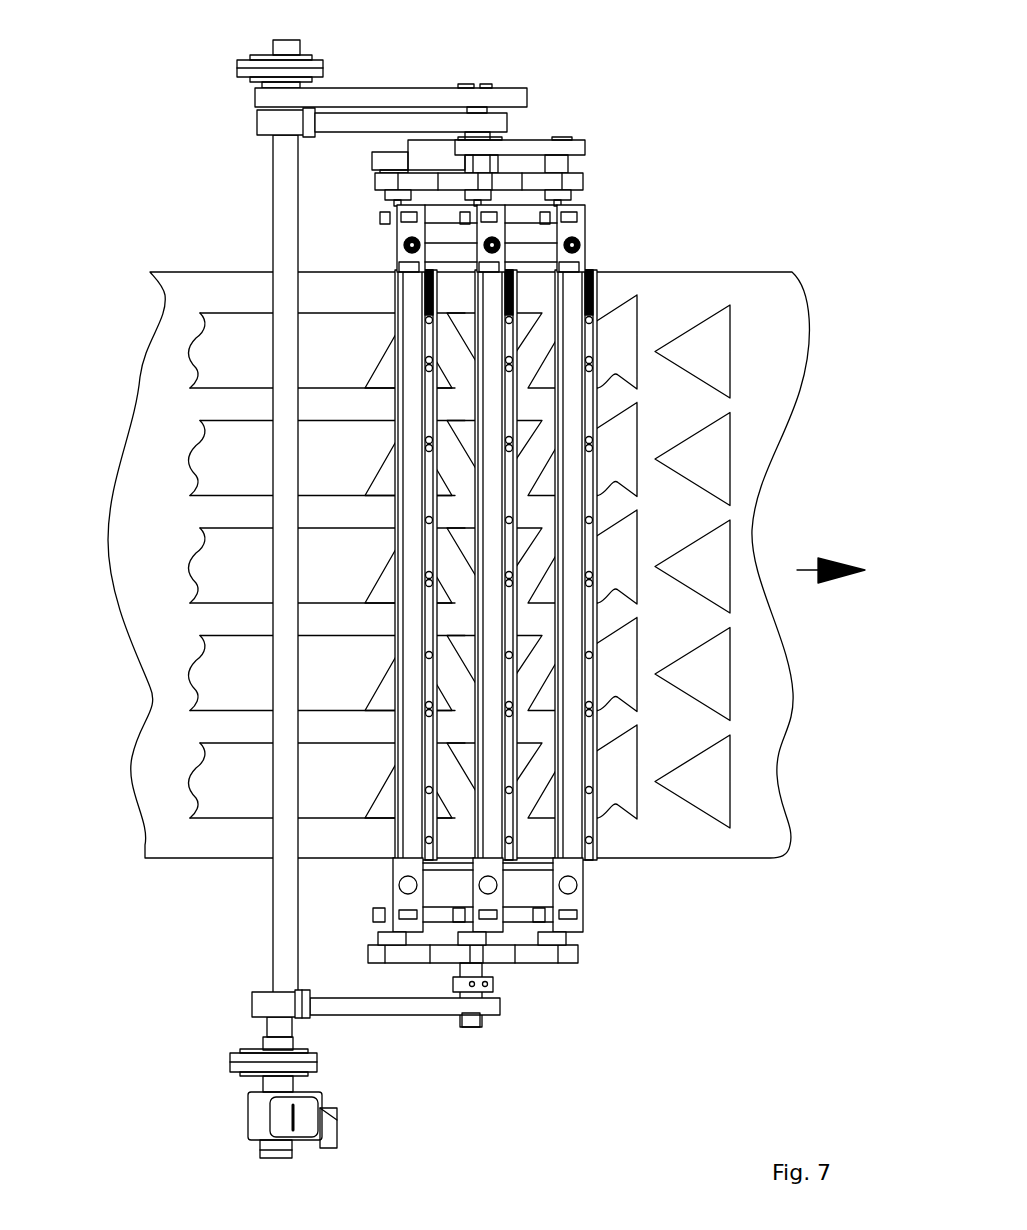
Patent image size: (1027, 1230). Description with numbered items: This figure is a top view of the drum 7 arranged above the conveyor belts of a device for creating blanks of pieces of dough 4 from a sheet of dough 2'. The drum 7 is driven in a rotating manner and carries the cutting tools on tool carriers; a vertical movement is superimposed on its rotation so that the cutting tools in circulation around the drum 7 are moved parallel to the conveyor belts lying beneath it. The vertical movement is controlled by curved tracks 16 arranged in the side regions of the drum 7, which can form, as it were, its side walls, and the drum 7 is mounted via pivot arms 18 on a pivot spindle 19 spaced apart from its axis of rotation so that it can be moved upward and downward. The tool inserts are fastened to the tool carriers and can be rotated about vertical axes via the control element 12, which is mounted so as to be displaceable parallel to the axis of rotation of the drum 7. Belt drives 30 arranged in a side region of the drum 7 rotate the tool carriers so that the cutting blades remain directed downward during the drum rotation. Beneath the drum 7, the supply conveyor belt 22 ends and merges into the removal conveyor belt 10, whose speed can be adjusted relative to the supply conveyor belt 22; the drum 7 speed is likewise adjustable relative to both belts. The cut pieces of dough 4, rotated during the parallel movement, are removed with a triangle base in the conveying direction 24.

The sheet of dough 2' is at (255, 565).
The pieces of dough 4 is at (710, 343).
The drum 7 is at (676, 170).
The removal conveyor belt 10 is at (742, 837).
The control element 12 is at (580, 318).
The curved tracks 16 is at (505, 175).
The pivot arms 18 is at (385, 1007).
The pivot spindle 19 is at (280, 927).
The supply conveyor belt 22 is at (190, 288).
The conveying direction 24 is at (802, 565).
The belt drives 30 is at (568, 145).